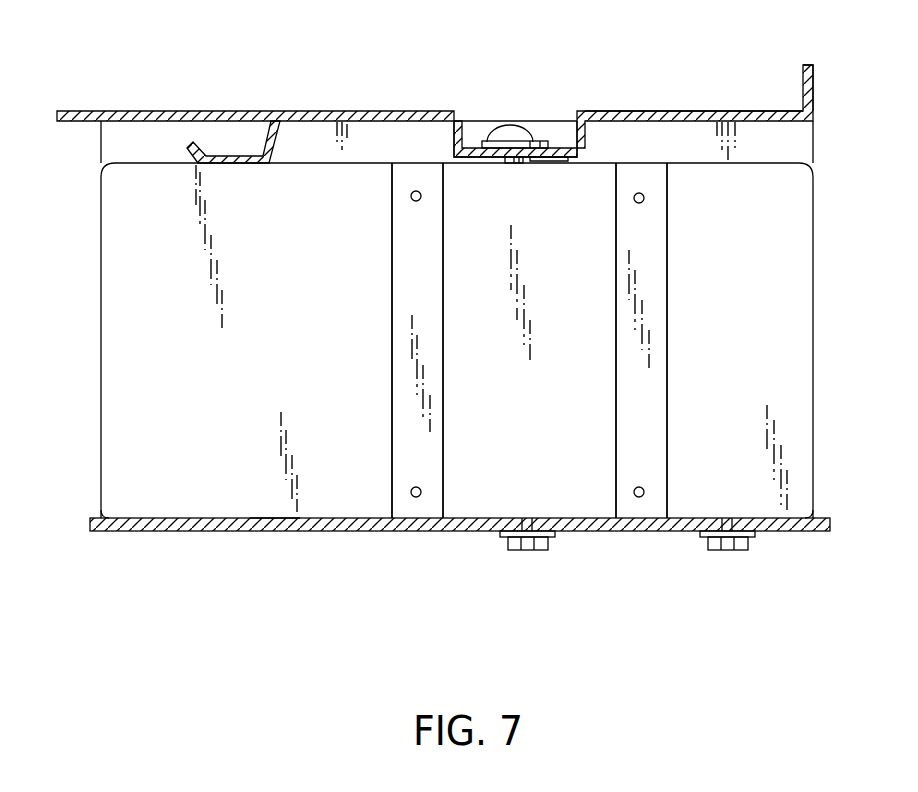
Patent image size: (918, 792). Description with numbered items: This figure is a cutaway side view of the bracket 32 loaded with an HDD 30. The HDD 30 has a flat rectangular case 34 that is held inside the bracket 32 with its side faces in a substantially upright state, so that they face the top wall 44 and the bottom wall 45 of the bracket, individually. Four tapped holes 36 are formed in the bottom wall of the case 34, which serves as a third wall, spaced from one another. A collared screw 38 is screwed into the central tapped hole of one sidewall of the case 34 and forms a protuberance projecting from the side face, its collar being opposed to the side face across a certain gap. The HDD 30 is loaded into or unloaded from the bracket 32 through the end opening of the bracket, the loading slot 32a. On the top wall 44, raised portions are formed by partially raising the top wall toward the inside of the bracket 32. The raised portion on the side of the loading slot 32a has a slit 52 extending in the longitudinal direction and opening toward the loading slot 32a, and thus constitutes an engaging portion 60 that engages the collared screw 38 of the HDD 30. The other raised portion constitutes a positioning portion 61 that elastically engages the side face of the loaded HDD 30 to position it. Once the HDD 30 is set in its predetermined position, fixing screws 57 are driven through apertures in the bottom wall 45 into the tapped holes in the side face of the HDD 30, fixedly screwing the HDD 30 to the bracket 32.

The HDD 30 is at (262, 486).
The bracket 32 is at (345, 108).
The loading slot 32a is at (752, 143).
The case 34 is at (120, 391).
The tapped holes 36 is at (411, 199).
The collared screw 38 is at (514, 130).
The top wall 44 is at (665, 109).
The bottom wall 45 is at (352, 533).
The slit 52 is at (568, 163).
The fixing screws 57 is at (530, 552).
The engaging portion 60 is at (560, 133).
The positioning portion 61 is at (221, 143).